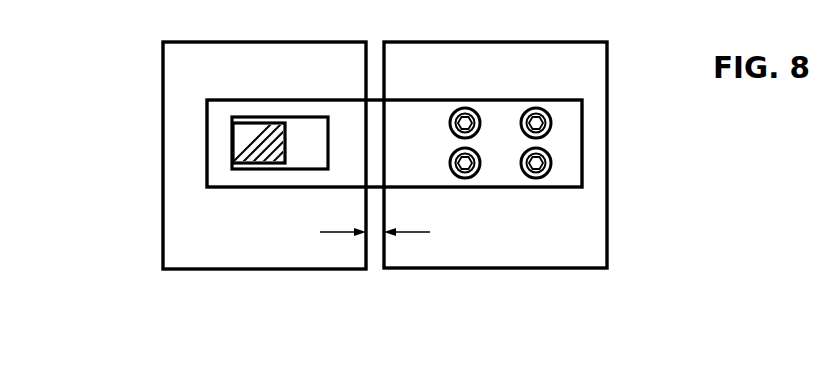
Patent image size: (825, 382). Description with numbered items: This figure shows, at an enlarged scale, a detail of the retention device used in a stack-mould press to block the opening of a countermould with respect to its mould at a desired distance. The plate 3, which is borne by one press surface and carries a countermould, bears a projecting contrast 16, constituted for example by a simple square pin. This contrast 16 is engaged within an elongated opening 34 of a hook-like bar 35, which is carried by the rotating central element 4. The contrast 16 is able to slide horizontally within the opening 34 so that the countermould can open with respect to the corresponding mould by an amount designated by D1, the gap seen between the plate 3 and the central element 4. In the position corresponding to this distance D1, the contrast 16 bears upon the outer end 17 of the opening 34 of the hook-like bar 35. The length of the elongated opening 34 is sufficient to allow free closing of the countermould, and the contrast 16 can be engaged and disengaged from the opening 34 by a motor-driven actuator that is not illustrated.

The plate 3 is at (190, 224).
The rotating central element 4 is at (580, 230).
The projecting contrast 16 is at (248, 133).
The outer end of the opening 17 is at (232, 137).
The elongated opening 34 is at (312, 143).
The hook-like bar 35 is at (422, 128).
The opening amount D1 is at (361, 231).